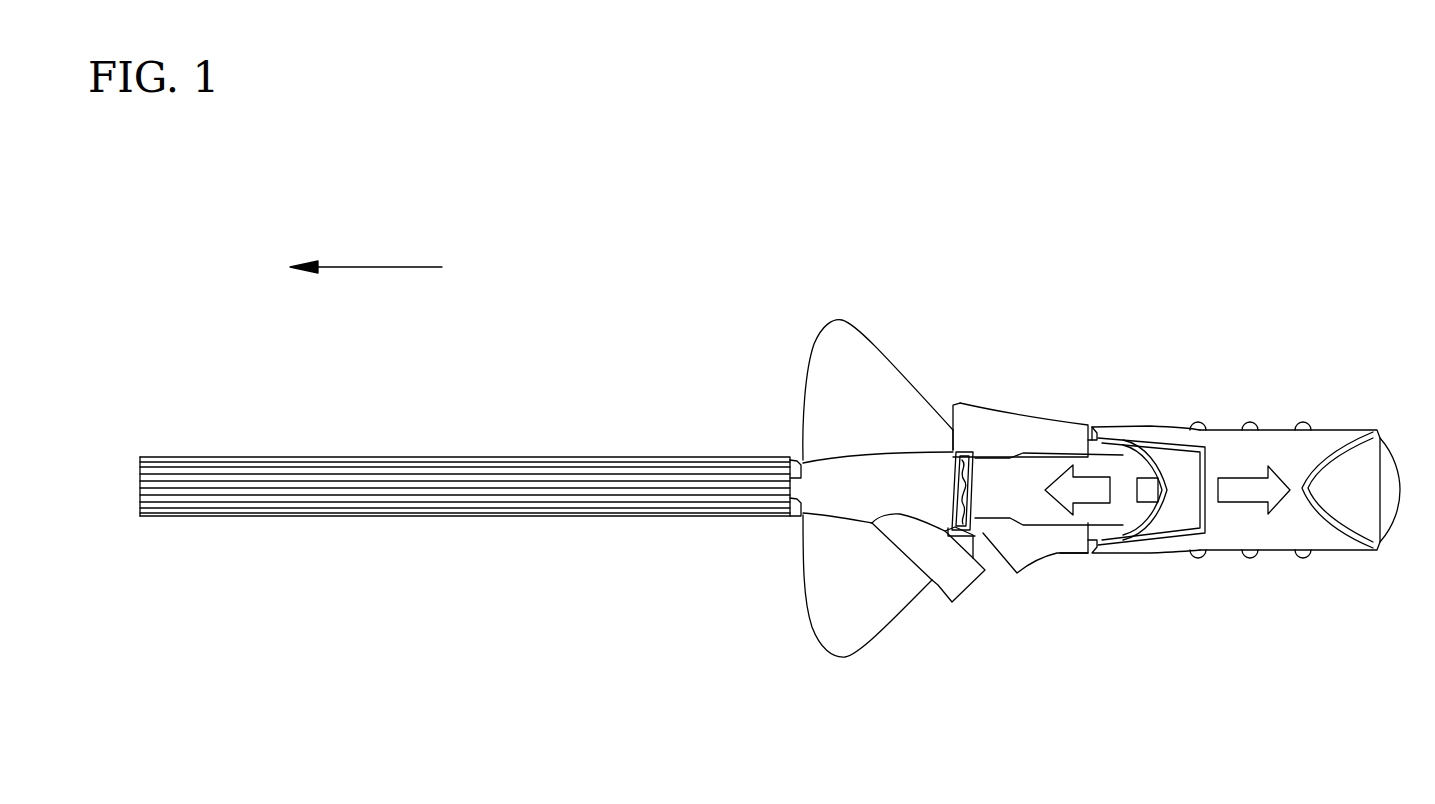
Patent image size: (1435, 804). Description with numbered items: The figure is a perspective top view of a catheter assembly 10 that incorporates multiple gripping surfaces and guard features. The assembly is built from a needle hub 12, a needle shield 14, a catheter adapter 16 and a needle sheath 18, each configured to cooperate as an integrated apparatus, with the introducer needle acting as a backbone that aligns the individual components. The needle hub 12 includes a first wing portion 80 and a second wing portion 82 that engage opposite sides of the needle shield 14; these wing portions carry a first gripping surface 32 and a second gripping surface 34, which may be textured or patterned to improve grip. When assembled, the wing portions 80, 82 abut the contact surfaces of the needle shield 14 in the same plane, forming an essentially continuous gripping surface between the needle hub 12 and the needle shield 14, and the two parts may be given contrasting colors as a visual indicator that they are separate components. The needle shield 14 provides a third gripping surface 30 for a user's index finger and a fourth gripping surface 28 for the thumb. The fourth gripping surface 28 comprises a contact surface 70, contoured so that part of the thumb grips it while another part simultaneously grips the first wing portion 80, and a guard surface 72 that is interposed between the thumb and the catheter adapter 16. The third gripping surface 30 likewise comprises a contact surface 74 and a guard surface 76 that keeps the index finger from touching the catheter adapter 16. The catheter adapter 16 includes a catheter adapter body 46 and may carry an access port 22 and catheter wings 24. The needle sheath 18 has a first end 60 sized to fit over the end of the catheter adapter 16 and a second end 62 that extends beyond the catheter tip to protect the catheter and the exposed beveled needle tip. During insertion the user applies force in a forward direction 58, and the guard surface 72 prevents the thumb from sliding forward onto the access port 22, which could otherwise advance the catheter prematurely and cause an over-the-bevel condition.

The catheter assembly 10 is at (1290, 204).
The needle hub 12 is at (1327, 437).
The needle shield 14 is at (1062, 433).
The catheter adapter 16 is at (812, 567).
The needle sheath 18 is at (385, 517).
The access port 22 is at (936, 556).
The catheter wings 24 is at (838, 351).
The fourth gripping surface 28 is at (1038, 560).
The third gripping surface 30 is at (1006, 413).
The first gripping surface 32 is at (1318, 562).
The second gripping surface 34 is at (1247, 430).
The catheter adapter body 46 is at (843, 490).
The forward direction 58 is at (357, 265).
The first end of needle sheath 60 is at (790, 460).
The second end of needle sheath 62 is at (140, 460).
The contact surface 70 is at (1087, 560).
The guard surface 72 is at (1000, 558).
The contact surface 74 is at (958, 404).
The guard surface 76 is at (953, 430).
The first wing portion 80 is at (1125, 563).
The second wing portion 82 is at (1122, 433).